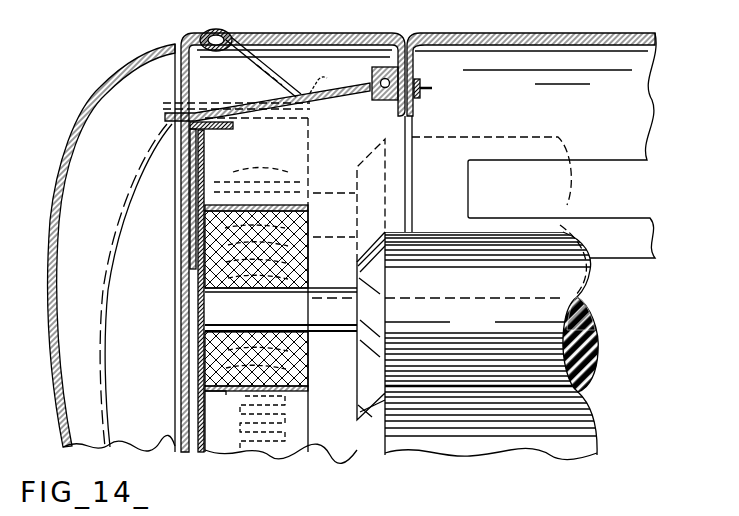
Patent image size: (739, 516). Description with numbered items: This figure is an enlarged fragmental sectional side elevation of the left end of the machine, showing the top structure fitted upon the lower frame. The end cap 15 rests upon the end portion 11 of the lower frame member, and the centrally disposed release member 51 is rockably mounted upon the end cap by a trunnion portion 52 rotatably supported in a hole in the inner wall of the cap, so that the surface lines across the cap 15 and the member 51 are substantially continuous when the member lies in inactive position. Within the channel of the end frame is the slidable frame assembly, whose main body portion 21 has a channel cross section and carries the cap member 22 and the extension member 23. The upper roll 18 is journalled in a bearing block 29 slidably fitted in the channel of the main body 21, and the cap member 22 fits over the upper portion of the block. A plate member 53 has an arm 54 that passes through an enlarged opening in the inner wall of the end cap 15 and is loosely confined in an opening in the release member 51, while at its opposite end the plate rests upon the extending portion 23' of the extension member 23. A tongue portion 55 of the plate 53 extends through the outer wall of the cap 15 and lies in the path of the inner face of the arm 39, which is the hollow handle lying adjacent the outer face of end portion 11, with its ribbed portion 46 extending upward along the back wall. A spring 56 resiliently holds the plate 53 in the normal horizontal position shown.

The end cap 15 is at (327, 34).
The release member 51 is at (511, 34).
The spring 56 is at (252, 61).
The trunnion portion 52 is at (372, 70).
The arm 54 is at (432, 89).
The tongue portion 55 is at (165, 118).
The plate member 53 is at (306, 102).
The extending portion 23' is at (221, 139).
The ribbed portion 46 is at (56, 183).
The extension member 23 is at (167, 199).
The arm 39 is at (114, 278).
The end portion 11 is at (196, 292).
The main body portion 21 is at (197, 328).
The cap member 22 is at (299, 207).
The bearing block 29 is at (309, 361).
The upper roll 18 is at (495, 322).